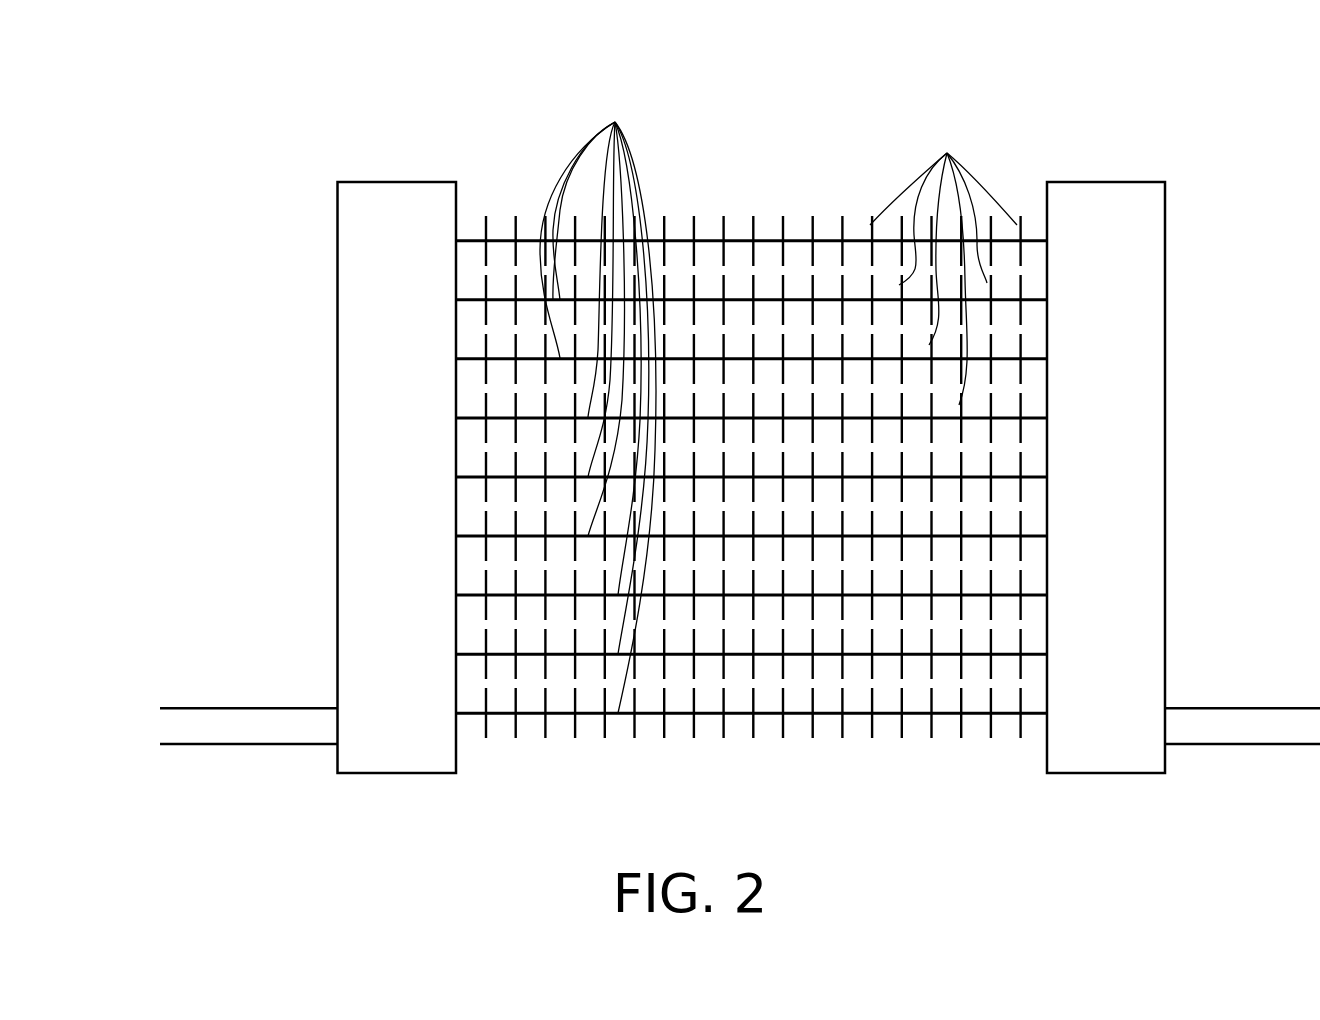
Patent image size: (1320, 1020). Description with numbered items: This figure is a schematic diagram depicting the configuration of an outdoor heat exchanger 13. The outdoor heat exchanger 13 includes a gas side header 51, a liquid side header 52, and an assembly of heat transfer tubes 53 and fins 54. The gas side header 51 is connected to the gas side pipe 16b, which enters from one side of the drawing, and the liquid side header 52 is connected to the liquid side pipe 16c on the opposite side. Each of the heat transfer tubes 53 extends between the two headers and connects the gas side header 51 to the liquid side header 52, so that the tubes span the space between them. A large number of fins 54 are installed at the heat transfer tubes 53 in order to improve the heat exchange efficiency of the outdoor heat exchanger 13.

The outdoor heat exchanger 13 is at (1224, 102).
The gas side header 51 is at (397, 205).
The liquid side header 52 is at (1105, 205).
The heat transfer tubes 53 is at (598, 399).
The fins 54 is at (943, 259).
The gas side pipe 16b is at (244, 722).
The liquid side pipe 16c is at (1247, 722).